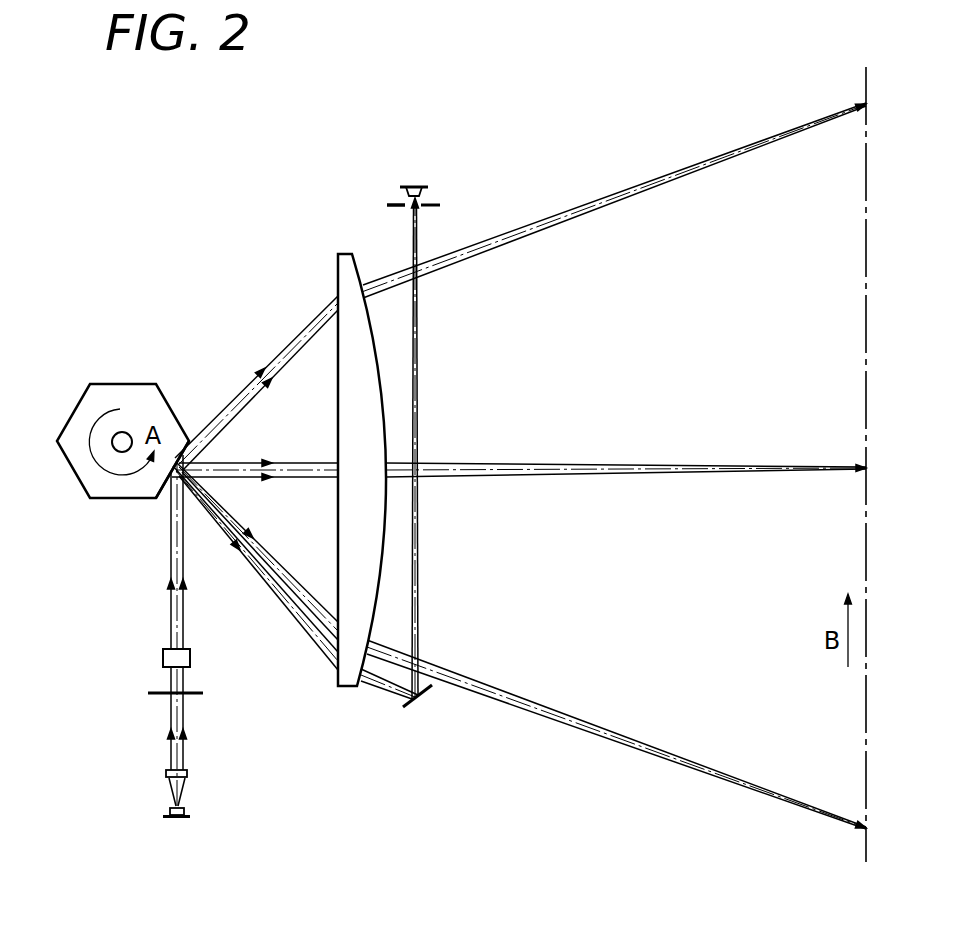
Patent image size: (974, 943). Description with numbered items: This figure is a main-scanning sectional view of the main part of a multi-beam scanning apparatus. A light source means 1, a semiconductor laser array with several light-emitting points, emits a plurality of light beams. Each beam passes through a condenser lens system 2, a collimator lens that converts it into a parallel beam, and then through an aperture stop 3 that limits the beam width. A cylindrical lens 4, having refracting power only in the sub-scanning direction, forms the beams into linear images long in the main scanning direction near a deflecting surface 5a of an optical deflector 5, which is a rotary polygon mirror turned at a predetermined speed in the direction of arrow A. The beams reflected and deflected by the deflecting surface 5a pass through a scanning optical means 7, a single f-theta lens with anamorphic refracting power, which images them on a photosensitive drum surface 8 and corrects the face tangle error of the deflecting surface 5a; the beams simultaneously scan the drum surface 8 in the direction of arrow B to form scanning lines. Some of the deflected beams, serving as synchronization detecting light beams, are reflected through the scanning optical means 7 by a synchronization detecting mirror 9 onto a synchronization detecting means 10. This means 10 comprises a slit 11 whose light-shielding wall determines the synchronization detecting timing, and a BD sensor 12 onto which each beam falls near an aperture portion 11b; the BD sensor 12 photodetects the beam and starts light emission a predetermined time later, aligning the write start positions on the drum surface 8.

The light source means 1 is at (172, 818).
The condenser lens system 2 is at (166, 772).
The aperture stop 3 is at (158, 694).
The cylindrical lens 4 is at (163, 659).
The optical deflector 5 is at (126, 386).
The deflecting surface 5a is at (181, 440).
The scanning optical means 7 is at (340, 258).
The photosensitive drum surface 8 is at (870, 554).
The synchronization detecting mirror 9 is at (428, 691).
The synchronization detecting means 10 is at (392, 93).
The slit 11 is at (436, 203).
The aperture portion 11b is at (408, 207).
The BD sensor 12 is at (418, 185).